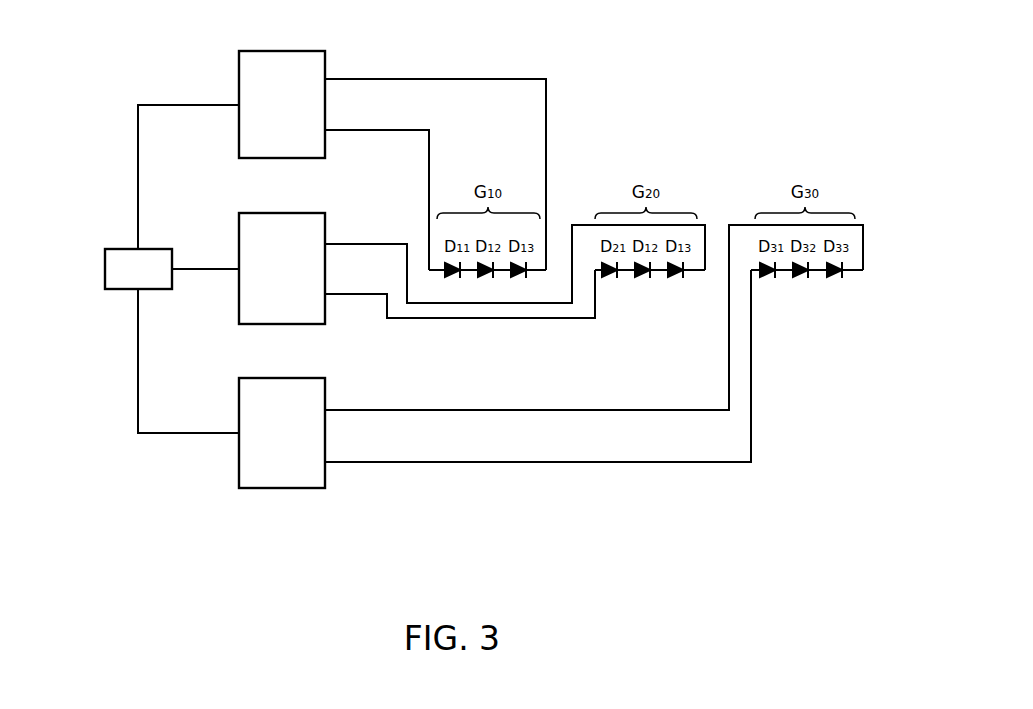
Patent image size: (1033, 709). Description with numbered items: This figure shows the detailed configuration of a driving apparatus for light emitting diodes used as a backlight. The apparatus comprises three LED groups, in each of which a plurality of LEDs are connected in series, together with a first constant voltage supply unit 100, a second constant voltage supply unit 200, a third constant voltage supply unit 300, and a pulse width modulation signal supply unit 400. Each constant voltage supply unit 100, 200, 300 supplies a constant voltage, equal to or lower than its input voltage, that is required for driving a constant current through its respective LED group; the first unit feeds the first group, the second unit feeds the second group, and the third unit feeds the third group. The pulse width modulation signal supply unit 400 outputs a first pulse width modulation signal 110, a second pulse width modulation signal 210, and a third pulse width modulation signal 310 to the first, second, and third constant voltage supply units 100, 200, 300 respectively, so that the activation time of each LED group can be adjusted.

The first constant voltage supply unit 100 is at (302, 51).
The second constant voltage supply unit 200 is at (302, 213).
The third constant voltage supply unit 300 is at (302, 378).
The pulse width modulation signal supply unit 400 is at (105, 268).
The pulse width modulation signal PWM110 110 is at (183, 163).
The pulse width modulation signal PWM210 210 is at (190, 250).
The pulse width modulation signal PWM310 310 is at (183, 375).